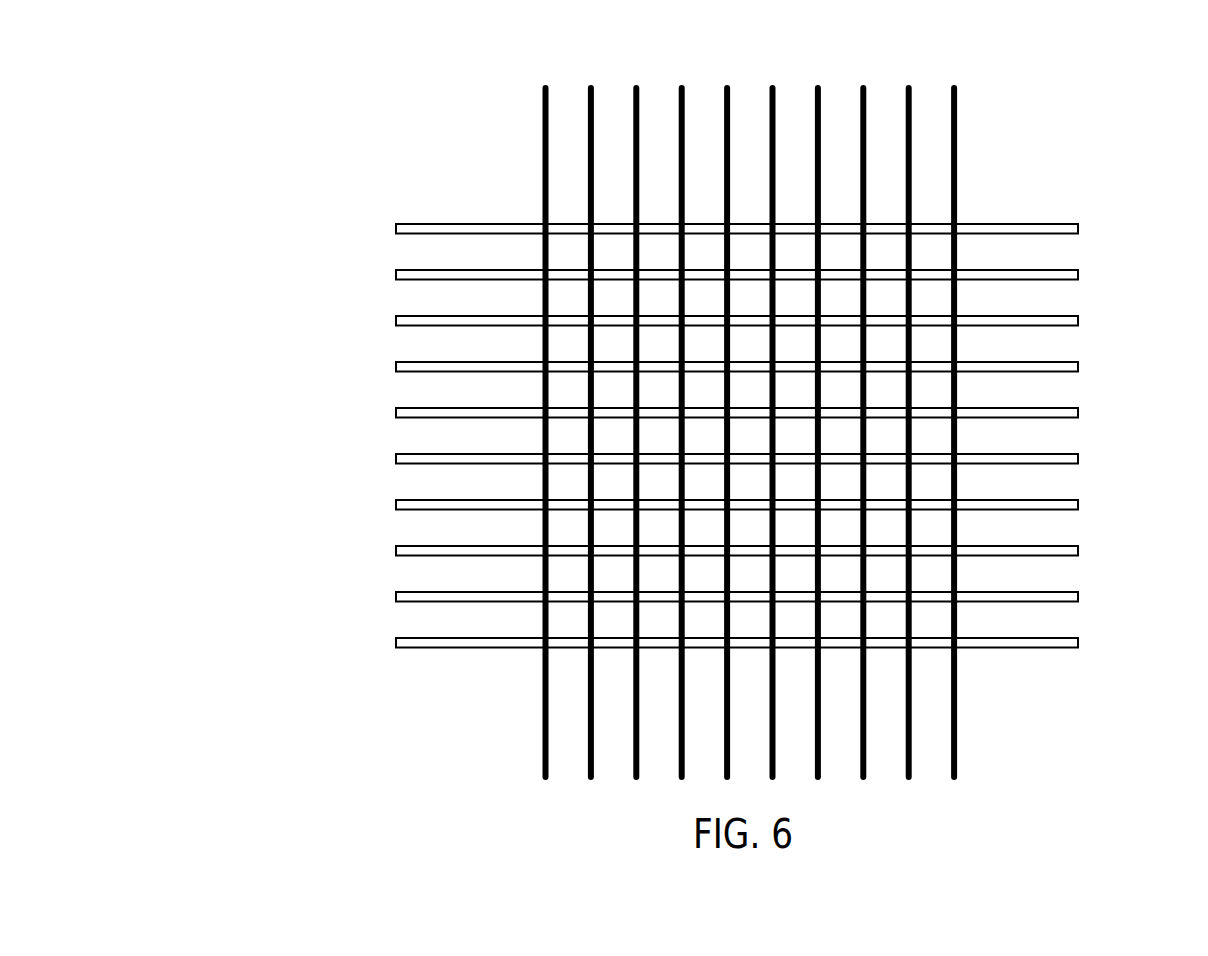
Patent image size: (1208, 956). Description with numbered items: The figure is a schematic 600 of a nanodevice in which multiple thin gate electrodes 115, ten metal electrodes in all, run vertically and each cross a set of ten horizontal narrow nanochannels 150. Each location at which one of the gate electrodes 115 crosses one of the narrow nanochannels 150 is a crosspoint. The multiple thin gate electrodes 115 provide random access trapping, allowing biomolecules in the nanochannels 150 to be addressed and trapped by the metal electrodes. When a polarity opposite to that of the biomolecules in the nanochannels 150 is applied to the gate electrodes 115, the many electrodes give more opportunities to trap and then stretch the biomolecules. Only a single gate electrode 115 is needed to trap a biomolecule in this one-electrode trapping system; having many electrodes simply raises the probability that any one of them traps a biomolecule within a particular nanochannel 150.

The thin gate electrodes 115 is at (518, 57).
The narrow nanochannels 150 is at (232, 210).
The schematic 600 is at (1160, 197).